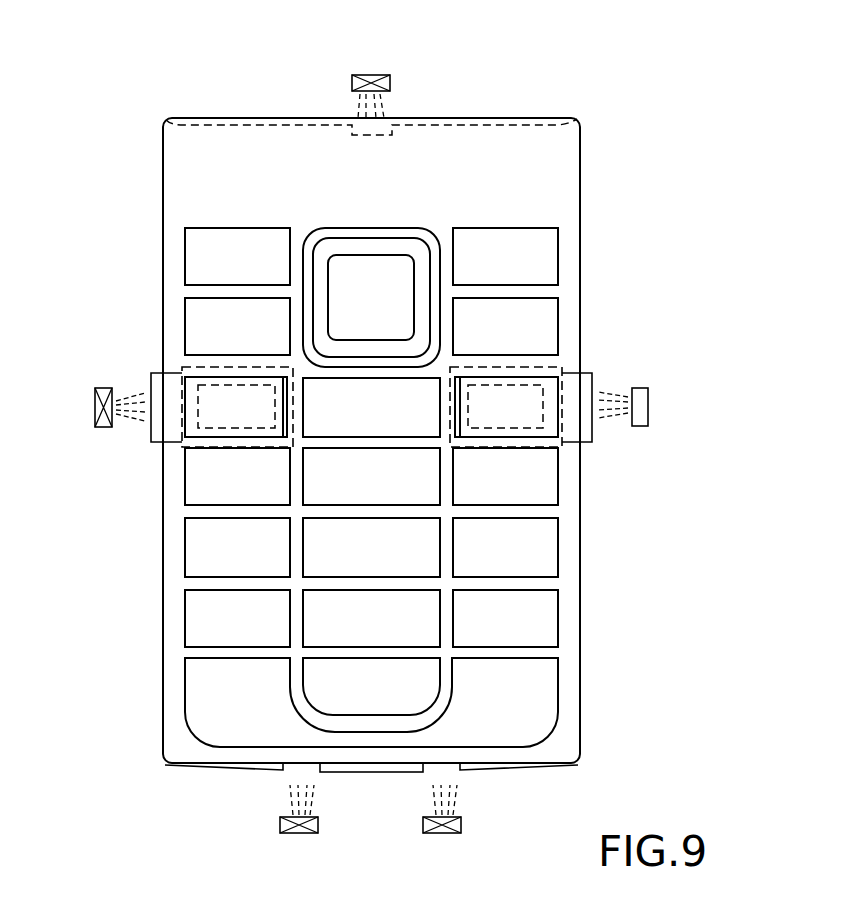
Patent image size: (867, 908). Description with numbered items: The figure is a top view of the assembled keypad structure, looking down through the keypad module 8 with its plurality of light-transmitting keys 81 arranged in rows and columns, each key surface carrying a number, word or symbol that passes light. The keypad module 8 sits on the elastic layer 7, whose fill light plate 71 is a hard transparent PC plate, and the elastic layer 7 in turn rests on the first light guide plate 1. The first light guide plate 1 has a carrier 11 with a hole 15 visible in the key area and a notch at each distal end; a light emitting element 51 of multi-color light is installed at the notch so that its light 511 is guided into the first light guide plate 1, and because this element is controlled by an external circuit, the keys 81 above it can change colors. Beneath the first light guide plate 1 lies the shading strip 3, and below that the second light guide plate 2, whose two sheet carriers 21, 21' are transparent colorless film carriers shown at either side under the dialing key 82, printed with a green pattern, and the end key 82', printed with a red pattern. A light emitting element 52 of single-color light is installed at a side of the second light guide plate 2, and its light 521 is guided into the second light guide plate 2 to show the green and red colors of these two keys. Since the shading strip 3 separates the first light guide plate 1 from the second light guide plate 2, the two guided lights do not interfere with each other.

The first light guide plate 1 is at (325, 120).
The second light guide plate 2 is at (580, 390).
The shading strip 3 is at (229, 365).
The elastic layer 7 is at (257, 118).
The keypad module 8 is at (572, 240).
The carrier 11 is at (480, 158).
The hole 15 is at (236, 430).
The sheet carrier 21 is at (101, 422).
The sheet carrier 21' is at (619, 440).
The light emitting element of multi-color light 51 is at (370, 75).
The light emitting element of single-color light 52 is at (96, 410).
The fill light plate 71 is at (200, 163).
The key 81 is at (543, 255).
The dialing key 82 is at (172, 379).
The end key 82' is at (580, 389).
The light 511 is at (388, 108).
The light 521 is at (613, 415).